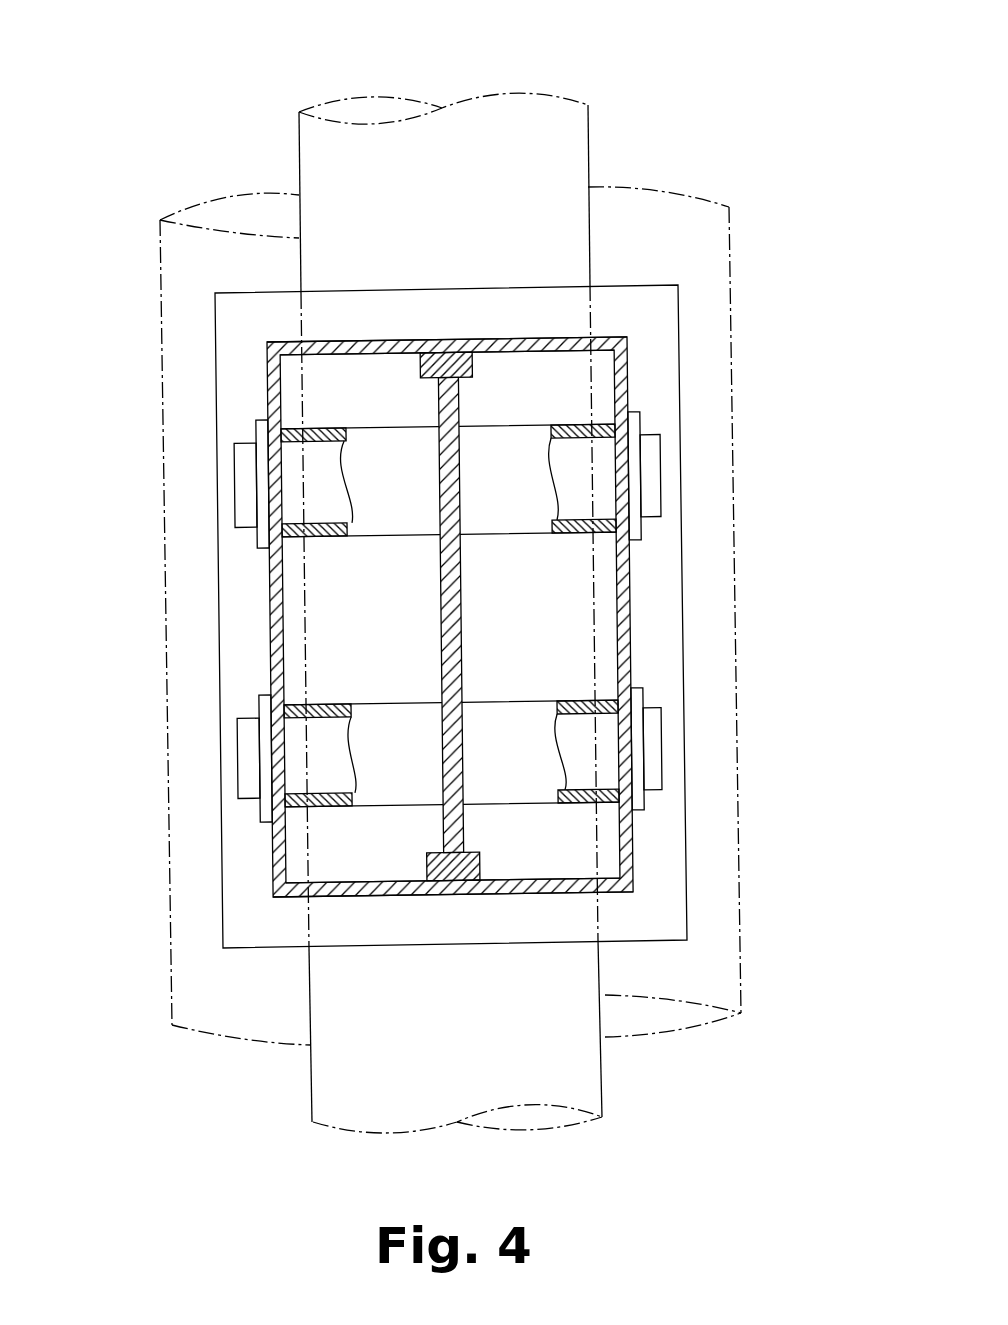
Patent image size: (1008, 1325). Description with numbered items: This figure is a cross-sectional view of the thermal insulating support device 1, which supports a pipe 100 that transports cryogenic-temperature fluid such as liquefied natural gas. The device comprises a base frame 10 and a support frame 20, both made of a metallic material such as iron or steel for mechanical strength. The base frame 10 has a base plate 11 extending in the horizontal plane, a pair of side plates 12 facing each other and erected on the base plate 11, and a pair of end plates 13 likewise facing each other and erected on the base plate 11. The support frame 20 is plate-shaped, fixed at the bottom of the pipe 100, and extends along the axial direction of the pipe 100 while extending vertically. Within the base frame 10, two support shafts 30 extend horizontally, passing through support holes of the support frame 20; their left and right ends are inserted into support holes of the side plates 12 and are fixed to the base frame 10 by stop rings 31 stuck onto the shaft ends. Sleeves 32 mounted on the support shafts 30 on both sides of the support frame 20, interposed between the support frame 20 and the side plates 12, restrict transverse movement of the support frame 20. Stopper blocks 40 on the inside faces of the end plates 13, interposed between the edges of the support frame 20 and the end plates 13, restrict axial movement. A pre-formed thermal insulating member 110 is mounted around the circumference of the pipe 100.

The thermal insulating support device 1 is at (700, 259).
The base frame 10 is at (700, 592).
The base plate 11 is at (661, 928).
The side plates 12 is at (265, 393).
The end plates 13 is at (517, 343).
The support frame 20 is at (420, 609).
The support shafts 30 is at (578, 493).
The stop rings 31 is at (636, 427).
The sleeves 32 is at (372, 498).
The stopper blocks 40 is at (443, 355).
The pipe 100 is at (441, 100).
The thermal insulating member 110 is at (197, 209).